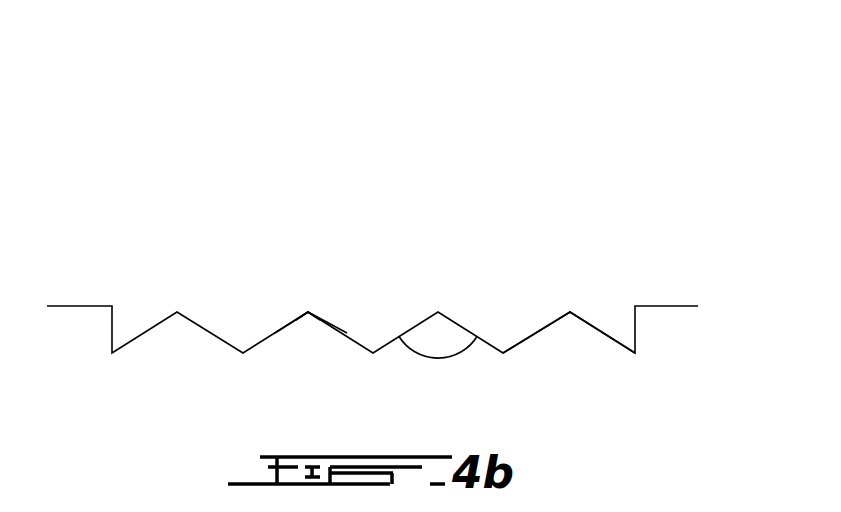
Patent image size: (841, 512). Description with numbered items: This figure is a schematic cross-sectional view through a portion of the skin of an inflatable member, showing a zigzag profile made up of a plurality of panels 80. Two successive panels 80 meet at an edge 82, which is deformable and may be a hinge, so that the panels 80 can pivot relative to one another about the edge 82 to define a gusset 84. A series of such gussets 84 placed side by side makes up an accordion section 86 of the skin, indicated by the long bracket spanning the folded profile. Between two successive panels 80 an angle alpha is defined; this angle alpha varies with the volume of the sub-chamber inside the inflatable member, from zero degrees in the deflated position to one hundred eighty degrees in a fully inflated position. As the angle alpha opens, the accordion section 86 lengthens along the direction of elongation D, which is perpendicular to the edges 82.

The panel 80 is at (347, 333).
The edge 82 is at (308, 310).
The gusset 84 is at (635, 247).
The accordion section 86 is at (635, 175).
The direction of elongation D is at (148, 42).
The angle alpha is at (438, 363).